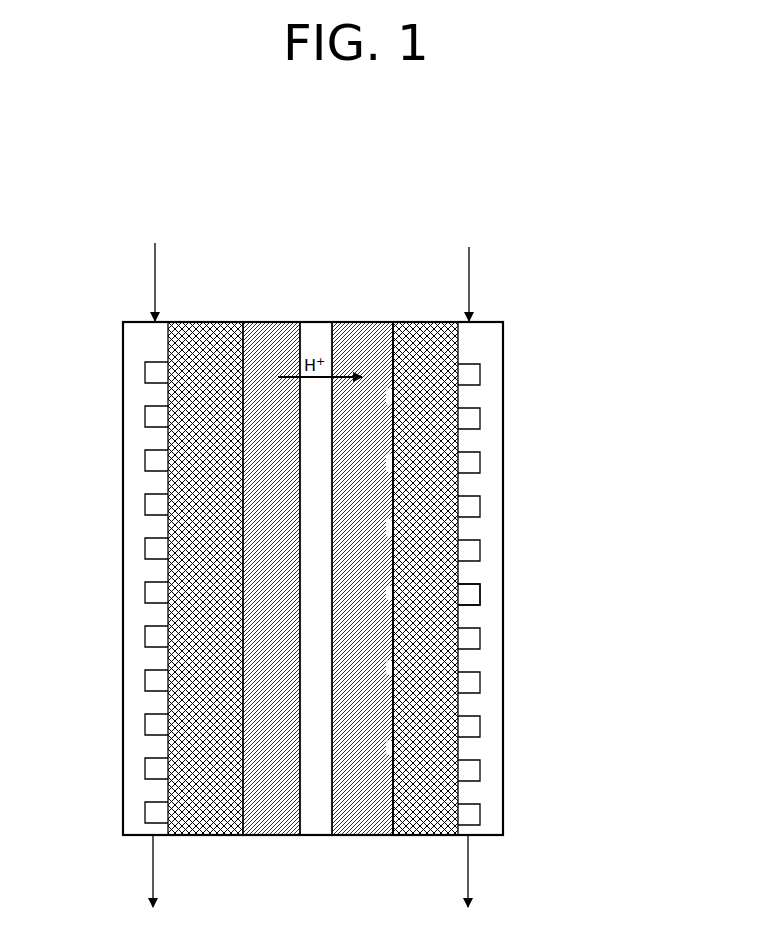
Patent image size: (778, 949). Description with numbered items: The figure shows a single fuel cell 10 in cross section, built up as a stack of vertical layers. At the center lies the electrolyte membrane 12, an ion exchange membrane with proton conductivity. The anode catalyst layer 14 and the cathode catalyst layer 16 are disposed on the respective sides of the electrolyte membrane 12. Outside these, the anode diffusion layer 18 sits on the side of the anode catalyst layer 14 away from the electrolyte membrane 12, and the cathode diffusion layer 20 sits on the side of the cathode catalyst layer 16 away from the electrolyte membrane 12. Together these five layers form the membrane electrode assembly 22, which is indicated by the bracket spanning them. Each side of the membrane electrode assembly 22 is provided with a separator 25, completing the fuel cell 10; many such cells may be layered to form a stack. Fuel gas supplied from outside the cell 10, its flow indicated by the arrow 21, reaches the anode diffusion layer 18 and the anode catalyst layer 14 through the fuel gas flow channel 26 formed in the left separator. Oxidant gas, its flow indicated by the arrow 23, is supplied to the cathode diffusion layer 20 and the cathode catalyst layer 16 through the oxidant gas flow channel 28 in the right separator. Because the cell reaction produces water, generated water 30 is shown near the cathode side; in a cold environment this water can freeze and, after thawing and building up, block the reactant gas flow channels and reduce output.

The fuel cell 10 is at (530, 352).
The electrolyte membrane 12 is at (320, 344).
The anode catalyst layer 14 is at (268, 345).
The cathode catalyst layer 16 is at (374, 344).
The anode diffusion layer 18 is at (213, 345).
The cathode diffusion layer 20 is at (425, 544).
The arrow 21 is at (155, 247).
The membrane electrode assembly 22 is at (313, 510).
The arrow 23 is at (472, 253).
The separator 25 is at (480, 437).
The fuel gas flow channel 26 is at (152, 550).
The oxidant gas flow channel 28 is at (460, 594).
The generated water 30 is at (393, 527).